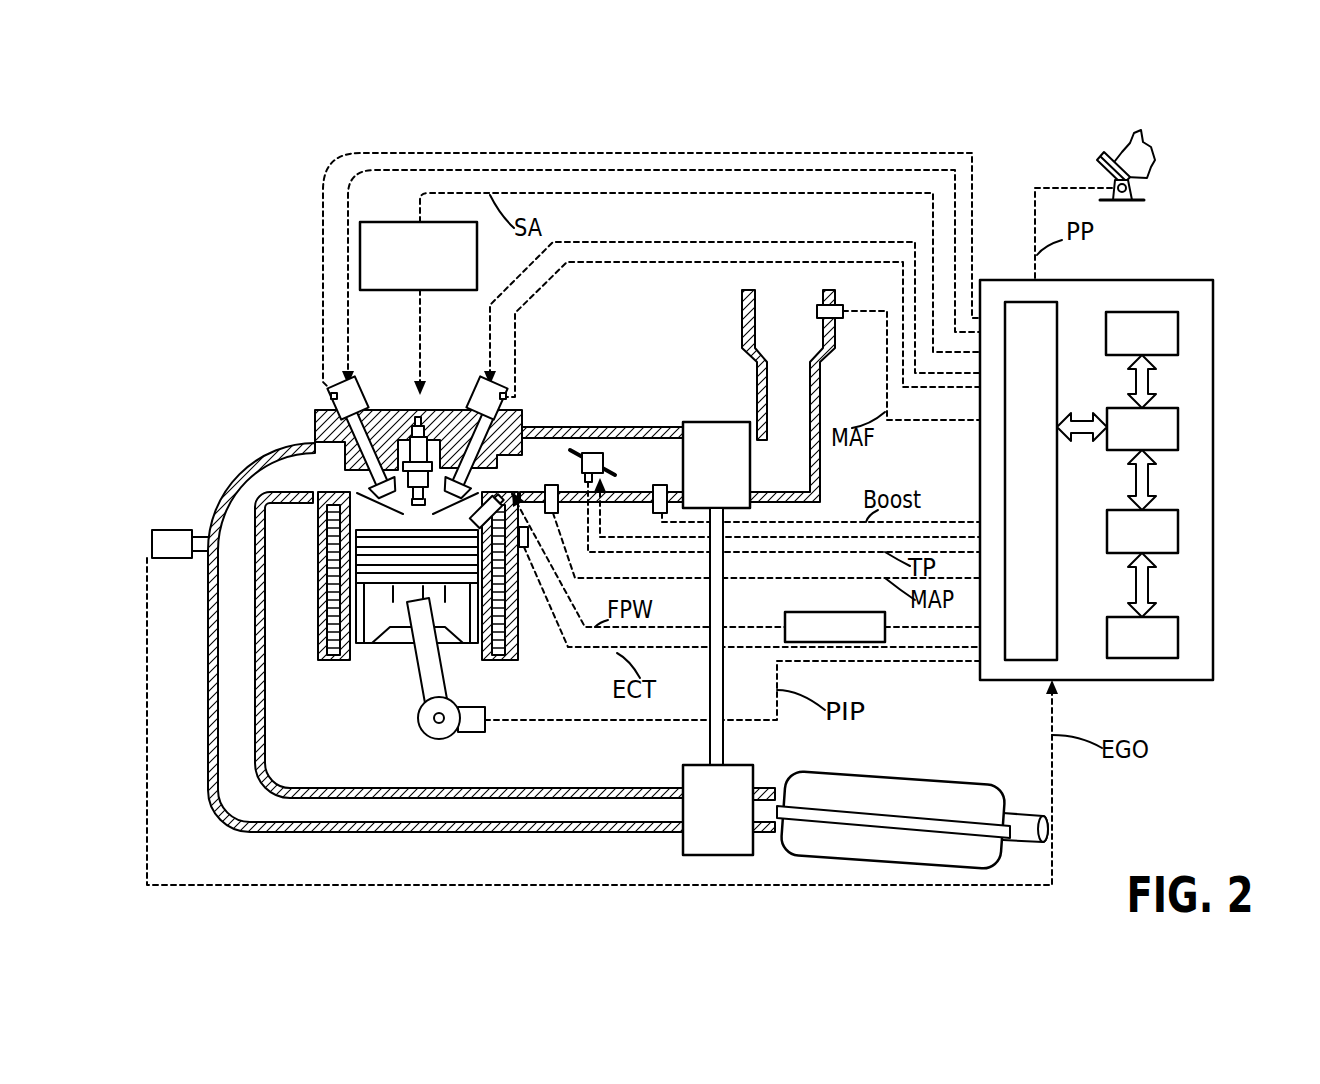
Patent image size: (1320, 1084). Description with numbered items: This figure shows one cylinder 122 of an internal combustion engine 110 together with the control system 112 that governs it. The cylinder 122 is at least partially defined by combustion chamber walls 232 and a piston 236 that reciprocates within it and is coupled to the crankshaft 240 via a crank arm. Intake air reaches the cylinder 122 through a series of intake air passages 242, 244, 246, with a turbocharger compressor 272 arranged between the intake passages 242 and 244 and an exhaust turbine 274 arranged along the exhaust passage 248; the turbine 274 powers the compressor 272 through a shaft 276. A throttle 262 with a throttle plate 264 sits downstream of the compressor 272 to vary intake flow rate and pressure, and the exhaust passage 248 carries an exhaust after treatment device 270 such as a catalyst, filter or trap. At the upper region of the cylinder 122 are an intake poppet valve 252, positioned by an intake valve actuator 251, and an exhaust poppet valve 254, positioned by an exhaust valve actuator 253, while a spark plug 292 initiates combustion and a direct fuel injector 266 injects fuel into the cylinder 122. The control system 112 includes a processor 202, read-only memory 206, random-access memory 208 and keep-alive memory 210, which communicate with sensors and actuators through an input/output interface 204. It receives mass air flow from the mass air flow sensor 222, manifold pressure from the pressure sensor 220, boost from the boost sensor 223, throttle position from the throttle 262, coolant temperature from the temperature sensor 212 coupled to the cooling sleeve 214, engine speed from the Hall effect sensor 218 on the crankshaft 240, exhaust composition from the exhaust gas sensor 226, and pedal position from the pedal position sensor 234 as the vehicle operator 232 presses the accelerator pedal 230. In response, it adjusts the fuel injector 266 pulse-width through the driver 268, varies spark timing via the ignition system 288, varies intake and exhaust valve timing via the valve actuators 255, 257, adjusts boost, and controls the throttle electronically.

The internal combustion engine 110 is at (248, 363).
The control system 112 is at (1213, 282).
The cylinder 122 is at (417, 512).
The processor (CPU) 202 is at (1178, 425).
The input/output (I/O) interface 204 is at (1060, 312).
The read-only memory (ROM) 206 is at (1178, 332).
The random-access memory (RAM) 208 is at (1178, 530).
The keep-alive memory (KAM) 210 is at (1178, 633).
The temperature sensor 212 is at (525, 548).
The cooling sleeve 214 is at (500, 640).
The Hall effect sensor 218 is at (476, 733).
The pressure sensor 220 is at (843, 306).
The mass air flow sensor 222 is at (552, 513).
The boost sensor 223 is at (654, 505).
The exhaust gas sensor 226 is at (152, 540).
The accelerator pedal 230 is at (1100, 168).
The vehicle operator 232 is at (340, 655).
The pedal position sensor 234 is at (1136, 188).
The piston 236 is at (400, 612).
The crankshaft 240 is at (428, 738).
The intake air passage 242 is at (772, 338).
The intake air passage 244 is at (636, 476).
The intake air passage 246 is at (533, 476).
The exhaust passage 248 is at (273, 483).
The intake valve actuator 251 is at (476, 383).
The intake poppet valve 252 is at (427, 445).
The exhaust valve actuator 253 is at (362, 383).
The exhaust poppet valve 254 is at (372, 488).
The valve actuator 255 is at (506, 396).
The valve actuator 257 is at (331, 395).
The throttle 262 is at (595, 453).
The throttle plate 264 is at (573, 450).
The fuel injector 266 is at (494, 500).
The driver 268 is at (790, 612).
The exhaust after treatment device 270 is at (965, 785).
The compressor 272 is at (700, 422).
The exhaust turbine 274 is at (683, 840).
The shaft 276 is at (723, 728).
The ignition system 288 is at (375, 222).
The spark plug 292 is at (412, 432).